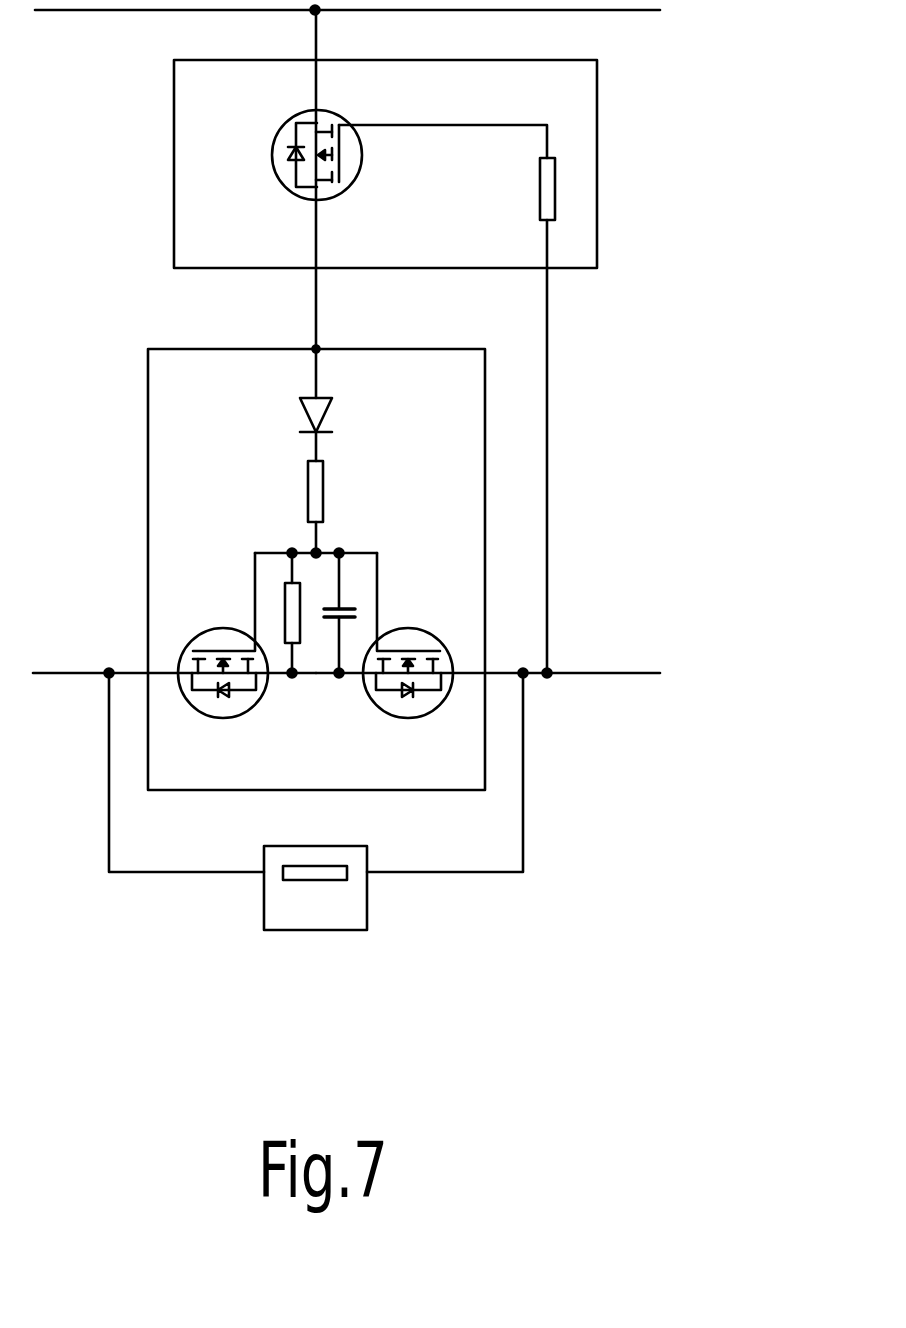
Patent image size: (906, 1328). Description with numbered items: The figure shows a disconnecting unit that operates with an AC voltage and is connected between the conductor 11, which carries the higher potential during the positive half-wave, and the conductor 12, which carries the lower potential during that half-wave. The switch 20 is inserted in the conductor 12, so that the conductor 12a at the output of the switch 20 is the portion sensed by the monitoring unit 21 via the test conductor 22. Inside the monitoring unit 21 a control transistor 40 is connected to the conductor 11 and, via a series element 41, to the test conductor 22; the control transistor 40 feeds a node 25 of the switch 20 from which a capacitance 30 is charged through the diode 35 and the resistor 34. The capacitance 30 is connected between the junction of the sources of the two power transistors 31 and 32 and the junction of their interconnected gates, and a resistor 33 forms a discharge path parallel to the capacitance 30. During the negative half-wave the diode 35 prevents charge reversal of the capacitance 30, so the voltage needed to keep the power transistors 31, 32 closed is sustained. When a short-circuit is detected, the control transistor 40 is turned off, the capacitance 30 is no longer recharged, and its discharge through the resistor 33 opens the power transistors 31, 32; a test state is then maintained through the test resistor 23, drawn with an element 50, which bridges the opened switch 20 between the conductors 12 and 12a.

The conductor 11 is at (98, 10).
The conductor 12 is at (75, 673).
The conductor 12a is at (603, 673).
The switch 20 is at (147, 558).
The monitoring unit 21 is at (174, 247).
The test conductor 22 is at (547, 488).
The test resistor 23 is at (367, 898).
The supply node 25 is at (316, 349).
The capacitance 30 is at (345, 605).
The power transistor 31 is at (223, 628).
The power transistor 32 is at (403, 627).
The resistor 33 is at (285, 607).
The resistor 34 is at (305, 485).
The diode 35 is at (328, 407).
The control transistor 40 is at (270, 153).
The gate resistor 41 is at (538, 185).
The sensing resistor 50 is at (300, 878).